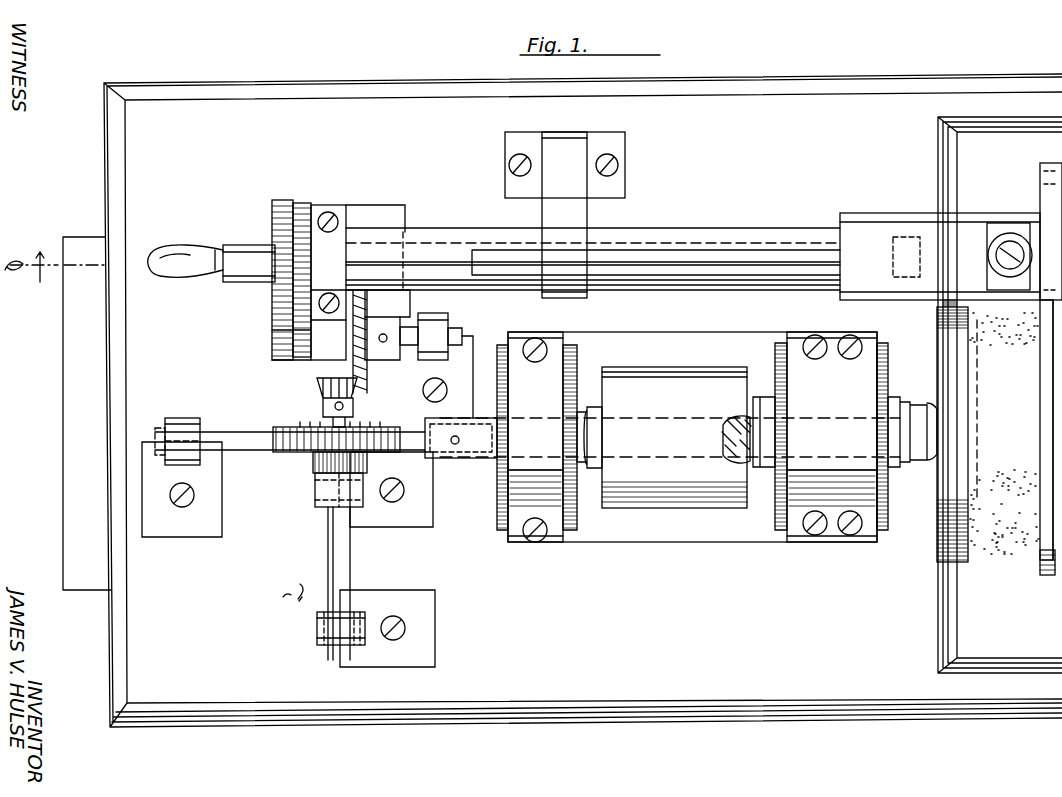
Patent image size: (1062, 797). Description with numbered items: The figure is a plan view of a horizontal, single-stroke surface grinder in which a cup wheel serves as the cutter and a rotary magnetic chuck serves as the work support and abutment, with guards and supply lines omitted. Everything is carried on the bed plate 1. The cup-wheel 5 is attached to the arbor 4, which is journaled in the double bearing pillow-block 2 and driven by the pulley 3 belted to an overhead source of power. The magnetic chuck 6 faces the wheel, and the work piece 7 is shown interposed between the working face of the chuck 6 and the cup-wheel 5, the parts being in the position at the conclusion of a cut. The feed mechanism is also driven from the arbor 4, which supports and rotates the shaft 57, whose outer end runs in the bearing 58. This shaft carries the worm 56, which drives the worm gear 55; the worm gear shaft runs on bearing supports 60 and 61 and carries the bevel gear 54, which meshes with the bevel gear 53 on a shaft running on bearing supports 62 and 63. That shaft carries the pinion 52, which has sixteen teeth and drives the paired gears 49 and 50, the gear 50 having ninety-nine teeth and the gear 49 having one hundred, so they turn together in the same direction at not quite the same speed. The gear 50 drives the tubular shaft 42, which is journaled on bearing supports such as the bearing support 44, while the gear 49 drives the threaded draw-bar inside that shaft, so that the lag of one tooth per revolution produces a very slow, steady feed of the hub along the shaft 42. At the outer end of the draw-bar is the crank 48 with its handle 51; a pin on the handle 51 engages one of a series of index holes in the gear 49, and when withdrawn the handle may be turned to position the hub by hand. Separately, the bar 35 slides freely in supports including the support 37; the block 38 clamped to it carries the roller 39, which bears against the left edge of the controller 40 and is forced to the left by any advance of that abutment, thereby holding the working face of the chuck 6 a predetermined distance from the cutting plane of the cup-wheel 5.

The bed plate 1 is at (762, 695).
The double bearing pillow-block 2 is at (703, 530).
The pulley 3 is at (670, 437).
The arbor 4 is at (490, 458).
The cup-wheel 5 is at (1000, 395).
The magnetic chuck 6 is at (1055, 638).
The work piece 7 is at (1040, 575).
The bar 35 is at (690, 240).
The support 37 is at (565, 215).
The block 38 is at (1022, 298).
The roller 39 is at (994, 245).
The controller 40 is at (1045, 184).
The tubular shaft 42 is at (737, 230).
The bearing support 44 is at (328, 212).
The crank 48 is at (236, 245).
The gear 49 is at (283, 200).
The gear 50 is at (302, 203).
The handle 51 is at (168, 270).
The pinion 52 is at (273, 352).
The bevel gear 53 is at (400, 308).
The bevel gear 54 is at (317, 386).
The worm gear 55 is at (290, 452).
The worm 56 is at (312, 462).
The shaft 57 is at (236, 438).
The bearing 58 is at (178, 420).
The bearing support 60 is at (318, 640).
The bearing support 61 is at (320, 507).
The bearing support 62 is at (328, 319).
The bearing support 63 is at (448, 318).